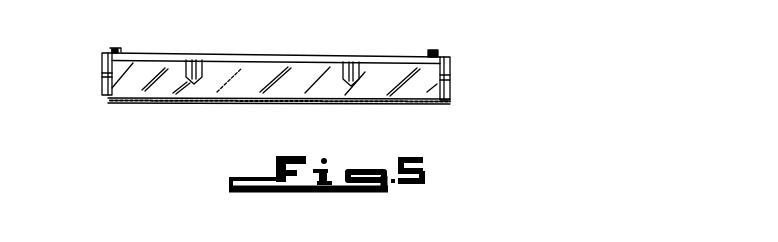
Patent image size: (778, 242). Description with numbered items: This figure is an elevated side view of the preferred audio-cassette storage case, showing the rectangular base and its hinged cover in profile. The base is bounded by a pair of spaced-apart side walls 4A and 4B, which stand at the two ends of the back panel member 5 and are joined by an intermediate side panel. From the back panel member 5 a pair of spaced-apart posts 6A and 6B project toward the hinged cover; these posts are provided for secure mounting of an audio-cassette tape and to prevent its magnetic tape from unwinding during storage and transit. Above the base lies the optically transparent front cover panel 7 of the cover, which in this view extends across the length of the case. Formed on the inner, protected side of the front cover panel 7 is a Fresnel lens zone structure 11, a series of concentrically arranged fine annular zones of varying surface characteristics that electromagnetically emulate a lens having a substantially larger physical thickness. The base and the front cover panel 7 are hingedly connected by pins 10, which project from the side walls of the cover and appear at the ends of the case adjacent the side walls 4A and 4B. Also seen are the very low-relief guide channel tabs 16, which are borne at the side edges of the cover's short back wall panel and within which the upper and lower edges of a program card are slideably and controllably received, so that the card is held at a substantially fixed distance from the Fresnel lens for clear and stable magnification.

The side wall 4A is at (450, 62).
The side wall 4B is at (100, 65).
The back panel member 5 is at (270, 53).
The post 6A is at (365, 72).
The post 6B is at (200, 63).
The optically transparent front cover panel 7 is at (245, 105).
The pins 10 is at (105, 78).
The Fresnel lens zone structure 11 is at (387, 105).
The guide channel tabs 16 is at (118, 48).